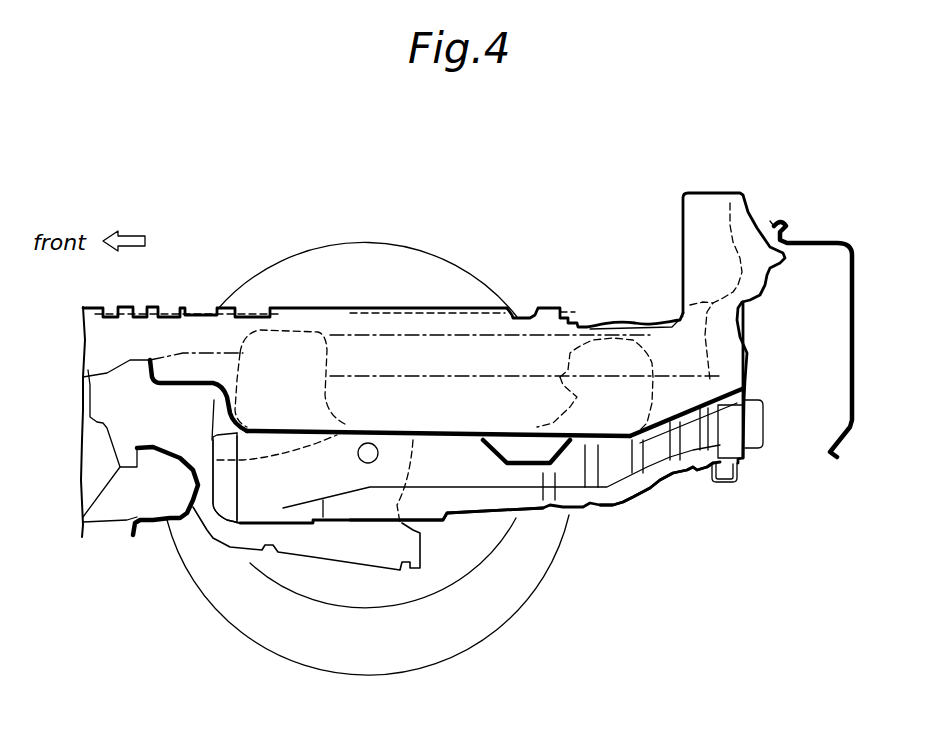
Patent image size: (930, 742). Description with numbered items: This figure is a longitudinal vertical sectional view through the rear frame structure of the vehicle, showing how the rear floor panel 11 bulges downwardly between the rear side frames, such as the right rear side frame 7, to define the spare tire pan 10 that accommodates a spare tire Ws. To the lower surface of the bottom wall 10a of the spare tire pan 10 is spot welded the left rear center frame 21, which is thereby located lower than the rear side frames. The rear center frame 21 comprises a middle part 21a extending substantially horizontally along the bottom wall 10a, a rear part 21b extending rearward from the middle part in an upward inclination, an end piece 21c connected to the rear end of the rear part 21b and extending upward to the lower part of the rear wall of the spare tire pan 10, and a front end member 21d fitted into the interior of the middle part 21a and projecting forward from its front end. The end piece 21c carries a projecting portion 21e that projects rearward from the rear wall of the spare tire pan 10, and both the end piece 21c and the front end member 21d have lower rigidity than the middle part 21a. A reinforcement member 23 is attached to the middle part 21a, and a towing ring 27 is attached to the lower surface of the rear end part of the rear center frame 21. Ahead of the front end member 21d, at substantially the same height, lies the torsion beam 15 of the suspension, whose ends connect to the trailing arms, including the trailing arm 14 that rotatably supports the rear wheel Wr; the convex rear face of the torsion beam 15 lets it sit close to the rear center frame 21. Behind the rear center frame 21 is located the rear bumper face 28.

The spare tire pan 10 is at (162, 447).
The bottom wall of the spare tire pan 10a is at (590, 430).
The rear floor panel 11 is at (700, 385).
The right rear side frame 7 is at (538, 318).
The rear bumper face 28 is at (845, 388).
The spare tire Ws is at (260, 328).
The rear wheel Wr is at (457, 262).
The left rear center frame 21 is at (610, 515).
The middle part 21a is at (428, 513).
The rear part 21b is at (662, 478).
The end piece 21c is at (732, 445).
The front end member 21d is at (225, 521).
The projecting portion 21e is at (760, 437).
The reinforcement member 23 is at (537, 465).
The towing ring 27 is at (728, 482).
The trailing arm 14 is at (257, 545).
The torsion beam 15 is at (155, 533).